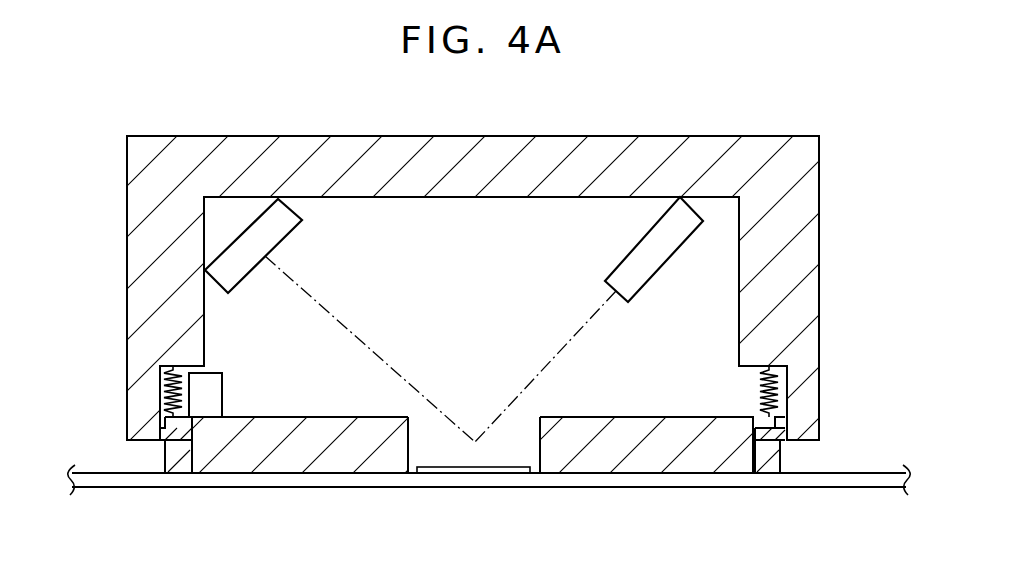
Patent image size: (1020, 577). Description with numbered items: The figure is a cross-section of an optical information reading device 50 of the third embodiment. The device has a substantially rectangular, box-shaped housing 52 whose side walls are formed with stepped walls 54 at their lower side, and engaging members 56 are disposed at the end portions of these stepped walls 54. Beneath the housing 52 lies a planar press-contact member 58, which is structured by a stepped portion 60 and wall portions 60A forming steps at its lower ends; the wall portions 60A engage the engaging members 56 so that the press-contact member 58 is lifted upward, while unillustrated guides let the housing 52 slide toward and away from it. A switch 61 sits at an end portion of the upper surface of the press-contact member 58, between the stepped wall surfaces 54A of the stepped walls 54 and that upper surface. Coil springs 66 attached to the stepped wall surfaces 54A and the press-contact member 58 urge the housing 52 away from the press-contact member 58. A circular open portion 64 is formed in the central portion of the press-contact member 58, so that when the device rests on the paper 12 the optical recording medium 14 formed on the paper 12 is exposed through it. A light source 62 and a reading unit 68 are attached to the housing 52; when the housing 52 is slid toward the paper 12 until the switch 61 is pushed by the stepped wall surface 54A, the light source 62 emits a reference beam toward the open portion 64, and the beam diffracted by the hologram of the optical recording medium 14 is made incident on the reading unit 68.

The paper 12 is at (867, 488).
The optical recording medium 14 is at (456, 475).
The optical information reading device 50 is at (855, 54).
The housing 52 is at (812, 243).
The stepped walls 54 is at (158, 370).
The stepped wall surfaces 54A is at (200, 382).
The engaging members 56 is at (176, 442).
The press-contact member 58 is at (298, 468).
The stepped portion 60 is at (188, 458).
The wall portions 60A is at (162, 431).
The switch 61 is at (213, 402).
The light source 62 is at (653, 267).
The open portion 64 is at (538, 453).
The coil springs 66 is at (158, 397).
The reading unit 68 is at (281, 228).